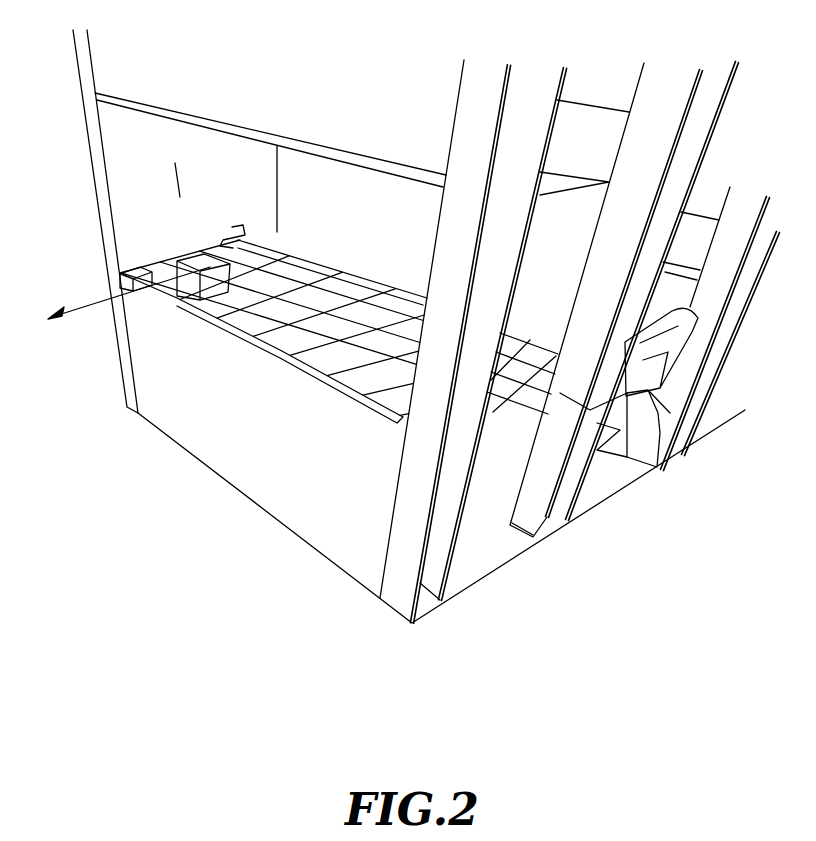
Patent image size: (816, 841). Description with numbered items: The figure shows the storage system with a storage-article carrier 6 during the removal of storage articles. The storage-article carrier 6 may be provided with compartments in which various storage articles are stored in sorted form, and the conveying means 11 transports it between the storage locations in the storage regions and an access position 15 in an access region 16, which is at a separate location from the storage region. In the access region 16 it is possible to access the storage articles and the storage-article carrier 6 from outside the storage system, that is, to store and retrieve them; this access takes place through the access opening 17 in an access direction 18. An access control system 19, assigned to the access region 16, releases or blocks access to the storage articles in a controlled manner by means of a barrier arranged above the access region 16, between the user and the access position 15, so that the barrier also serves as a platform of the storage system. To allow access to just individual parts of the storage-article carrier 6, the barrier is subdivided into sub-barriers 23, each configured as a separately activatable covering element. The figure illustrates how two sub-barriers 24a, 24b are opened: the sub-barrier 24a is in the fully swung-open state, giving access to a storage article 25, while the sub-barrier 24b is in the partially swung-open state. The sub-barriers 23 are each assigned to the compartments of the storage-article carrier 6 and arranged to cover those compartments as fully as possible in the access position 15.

The storage-article carrier 6 is at (537, 293).
The conveying means 11 is at (675, 440).
The access position 15 is at (565, 300).
The access region 16 is at (593, 450).
The access opening 17 is at (192, 183).
The access direction 18 is at (100, 298).
The access control system 19 is at (286, 334).
The sub-barrier 23 is at (221, 300).
The sub-barrier 24a is at (280, 230).
The sub-barrier 24b is at (268, 259).
The storage article 25 is at (186, 287).